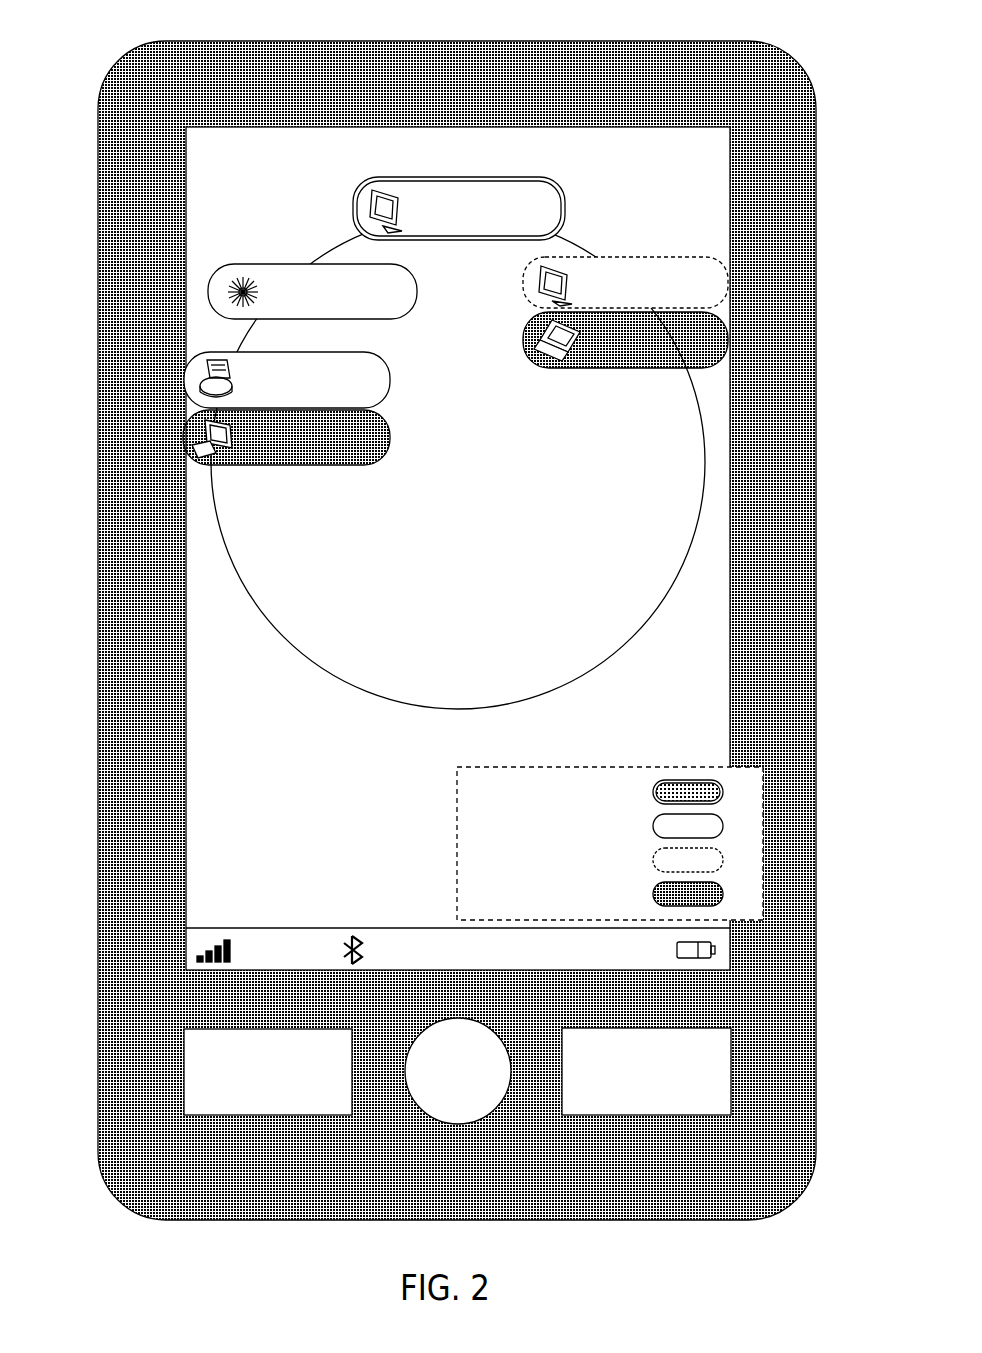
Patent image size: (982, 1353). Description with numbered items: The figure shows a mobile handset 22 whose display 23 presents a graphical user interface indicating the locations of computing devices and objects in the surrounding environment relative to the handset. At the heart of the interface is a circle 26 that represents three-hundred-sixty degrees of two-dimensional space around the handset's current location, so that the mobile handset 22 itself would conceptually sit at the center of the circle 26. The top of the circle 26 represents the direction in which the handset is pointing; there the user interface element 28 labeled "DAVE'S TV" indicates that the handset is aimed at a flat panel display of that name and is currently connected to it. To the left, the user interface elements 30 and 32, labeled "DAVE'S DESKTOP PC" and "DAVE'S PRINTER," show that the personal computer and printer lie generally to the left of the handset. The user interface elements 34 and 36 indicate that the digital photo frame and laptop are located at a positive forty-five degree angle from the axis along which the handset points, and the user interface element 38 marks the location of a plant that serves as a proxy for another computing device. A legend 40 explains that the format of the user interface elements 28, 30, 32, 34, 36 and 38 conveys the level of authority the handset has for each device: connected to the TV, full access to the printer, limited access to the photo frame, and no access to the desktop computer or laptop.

The mobile handset 22 is at (102, 100).
The display 23 is at (185, 255).
The circle 26 is at (322, 612).
The user interface element 28 is at (565, 197).
The user interface element 30 is at (372, 466).
The user interface element 32 is at (362, 351).
The user interface element 34 is at (665, 257).
The user interface element 36 is at (610, 370).
The user interface element 38 is at (307, 260).
The legend 40 is at (458, 803).